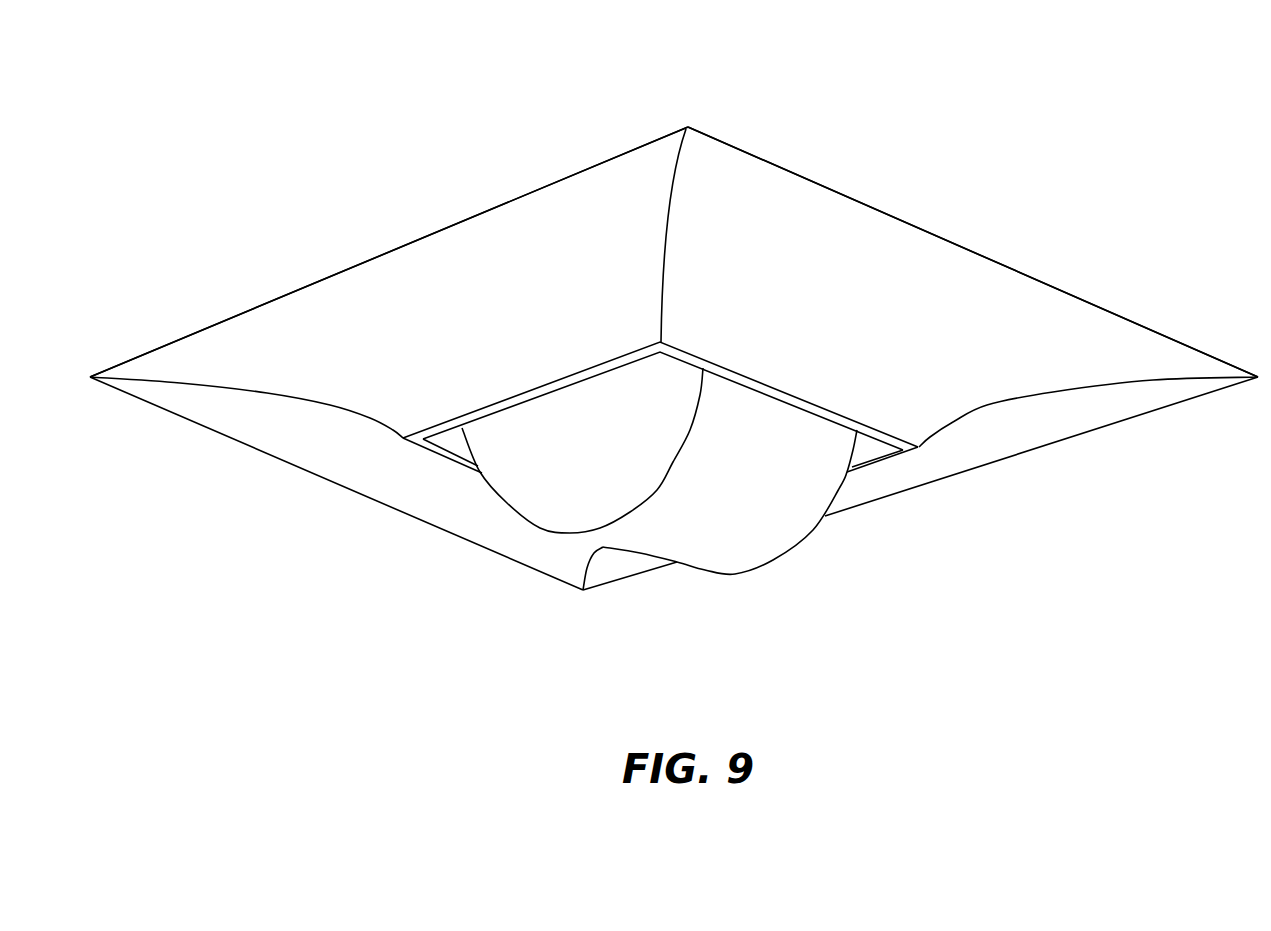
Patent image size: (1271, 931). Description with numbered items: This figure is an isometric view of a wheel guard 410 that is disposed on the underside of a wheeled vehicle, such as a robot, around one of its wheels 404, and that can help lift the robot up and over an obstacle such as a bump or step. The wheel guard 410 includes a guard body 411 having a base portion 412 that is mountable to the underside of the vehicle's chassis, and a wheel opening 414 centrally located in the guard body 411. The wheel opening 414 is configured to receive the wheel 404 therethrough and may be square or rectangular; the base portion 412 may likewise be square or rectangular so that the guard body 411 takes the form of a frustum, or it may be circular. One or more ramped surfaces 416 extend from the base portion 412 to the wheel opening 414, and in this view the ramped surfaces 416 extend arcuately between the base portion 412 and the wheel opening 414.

The wheel 404 is at (725, 547).
The wheel guard 410 is at (978, 176).
The guard body 411 is at (943, 320).
The base portion 412 is at (632, 148).
The wheel opening 414 is at (873, 461).
The ramped surfaces 416 is at (770, 210).